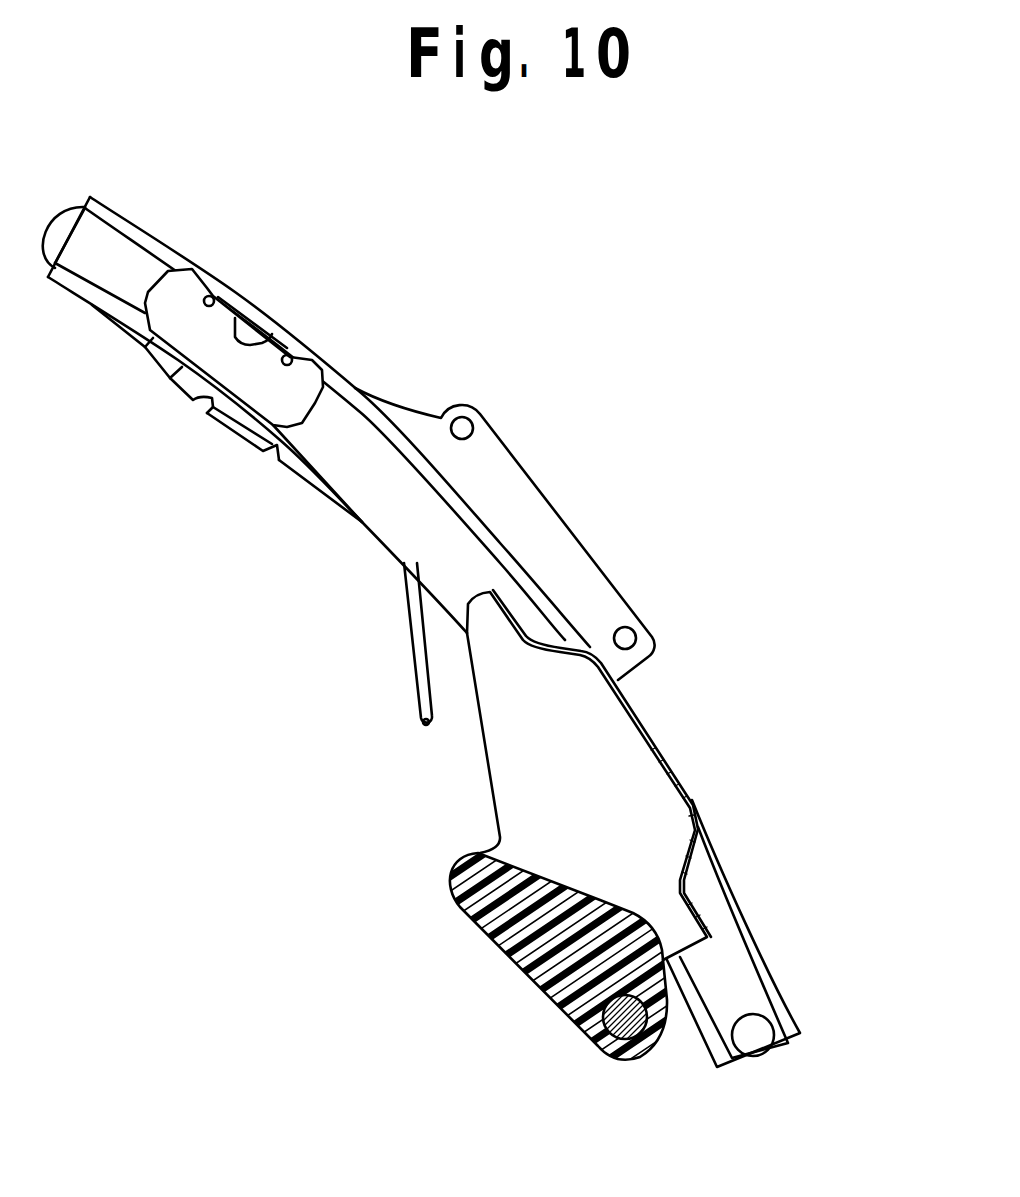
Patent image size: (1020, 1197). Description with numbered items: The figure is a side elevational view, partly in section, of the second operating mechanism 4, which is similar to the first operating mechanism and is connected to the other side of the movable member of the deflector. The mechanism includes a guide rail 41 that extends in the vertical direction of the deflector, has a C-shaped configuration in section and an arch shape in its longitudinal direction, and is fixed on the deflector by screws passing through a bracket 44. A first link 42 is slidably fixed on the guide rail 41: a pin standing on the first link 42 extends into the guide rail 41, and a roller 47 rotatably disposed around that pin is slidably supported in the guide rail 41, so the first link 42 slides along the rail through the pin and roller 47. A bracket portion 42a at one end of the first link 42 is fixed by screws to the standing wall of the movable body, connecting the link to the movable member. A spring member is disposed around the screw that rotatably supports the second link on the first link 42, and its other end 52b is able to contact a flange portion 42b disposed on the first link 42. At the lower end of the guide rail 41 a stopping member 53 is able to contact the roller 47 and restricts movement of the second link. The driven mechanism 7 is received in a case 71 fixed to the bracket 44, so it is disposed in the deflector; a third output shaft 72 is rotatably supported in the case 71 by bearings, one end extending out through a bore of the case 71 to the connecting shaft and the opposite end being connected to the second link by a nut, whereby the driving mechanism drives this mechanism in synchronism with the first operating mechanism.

The second operating mechanism 4 is at (575, 508).
The guide rail 41 is at (457, 537).
The first link 42 is at (180, 388).
The bracket portion 42a is at (583, 573).
The flange portion 42b is at (233, 428).
The bracket 44 is at (312, 367).
The roller 47 is at (68, 220).
The other end of the spring member 52b is at (415, 646).
The stopping member 53 is at (760, 1032).
The driven mechanism 7 is at (486, 915).
The case 71 is at (500, 937).
The third output shaft 72 is at (620, 1030).